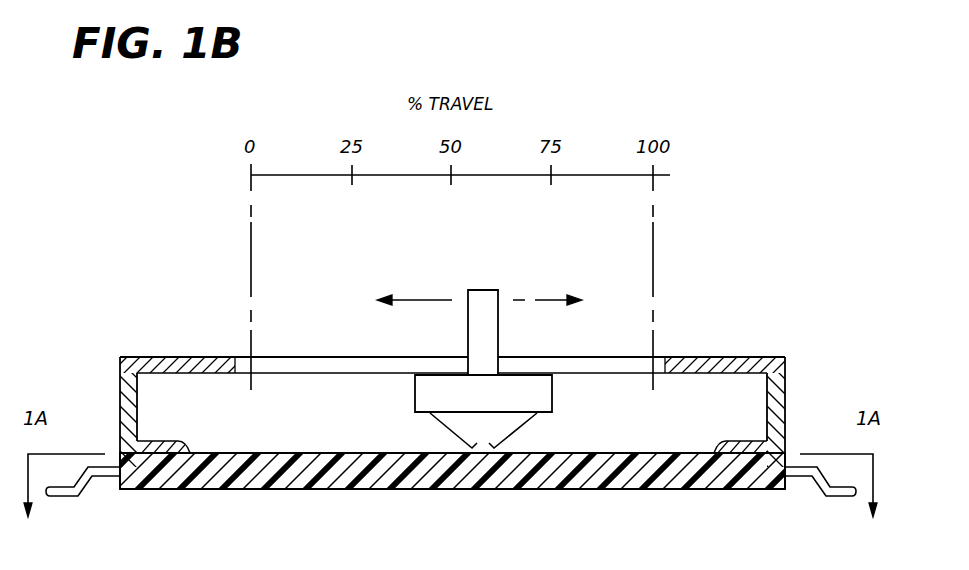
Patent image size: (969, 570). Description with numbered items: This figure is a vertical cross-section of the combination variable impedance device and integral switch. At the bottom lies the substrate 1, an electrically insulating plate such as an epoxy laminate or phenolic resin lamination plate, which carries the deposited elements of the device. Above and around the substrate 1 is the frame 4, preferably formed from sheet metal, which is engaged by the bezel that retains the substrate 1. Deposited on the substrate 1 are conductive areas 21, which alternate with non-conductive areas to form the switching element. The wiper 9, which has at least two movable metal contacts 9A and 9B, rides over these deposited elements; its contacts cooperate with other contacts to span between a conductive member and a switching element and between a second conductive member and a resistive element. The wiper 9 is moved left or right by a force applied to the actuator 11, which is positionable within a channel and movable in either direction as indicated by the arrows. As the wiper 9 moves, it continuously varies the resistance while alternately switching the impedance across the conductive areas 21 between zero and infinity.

The substrate 1 is at (293, 481).
The frame 4 is at (180, 357).
The wiper 9 is at (572, 375).
The movable contact 9A is at (440, 426).
The movable contact 9B is at (514, 427).
The actuator 11 is at (488, 290).
The conductive area 21 is at (153, 441).